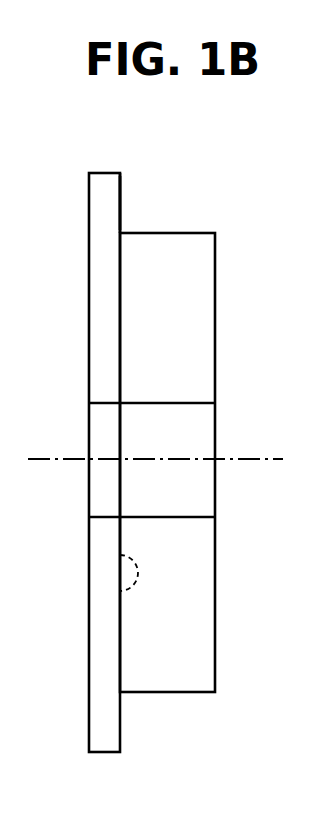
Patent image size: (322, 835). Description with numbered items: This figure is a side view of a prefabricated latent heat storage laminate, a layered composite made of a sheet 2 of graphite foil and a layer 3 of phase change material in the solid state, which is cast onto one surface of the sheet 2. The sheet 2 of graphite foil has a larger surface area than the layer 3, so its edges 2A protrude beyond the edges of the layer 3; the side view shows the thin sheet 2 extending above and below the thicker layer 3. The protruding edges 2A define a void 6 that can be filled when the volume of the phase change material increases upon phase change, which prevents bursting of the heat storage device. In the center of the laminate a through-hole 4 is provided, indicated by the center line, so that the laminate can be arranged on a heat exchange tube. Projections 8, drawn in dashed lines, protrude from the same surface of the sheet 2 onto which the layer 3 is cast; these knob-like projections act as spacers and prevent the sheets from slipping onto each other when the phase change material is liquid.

The sheet of graphite foil 2 is at (89, 568).
The edge 2A is at (122, 188).
The layer of phase change material 3 is at (177, 317).
The through-hole 4 is at (177, 440).
The void 6 is at (158, 172).
The projections 8 is at (138, 572).